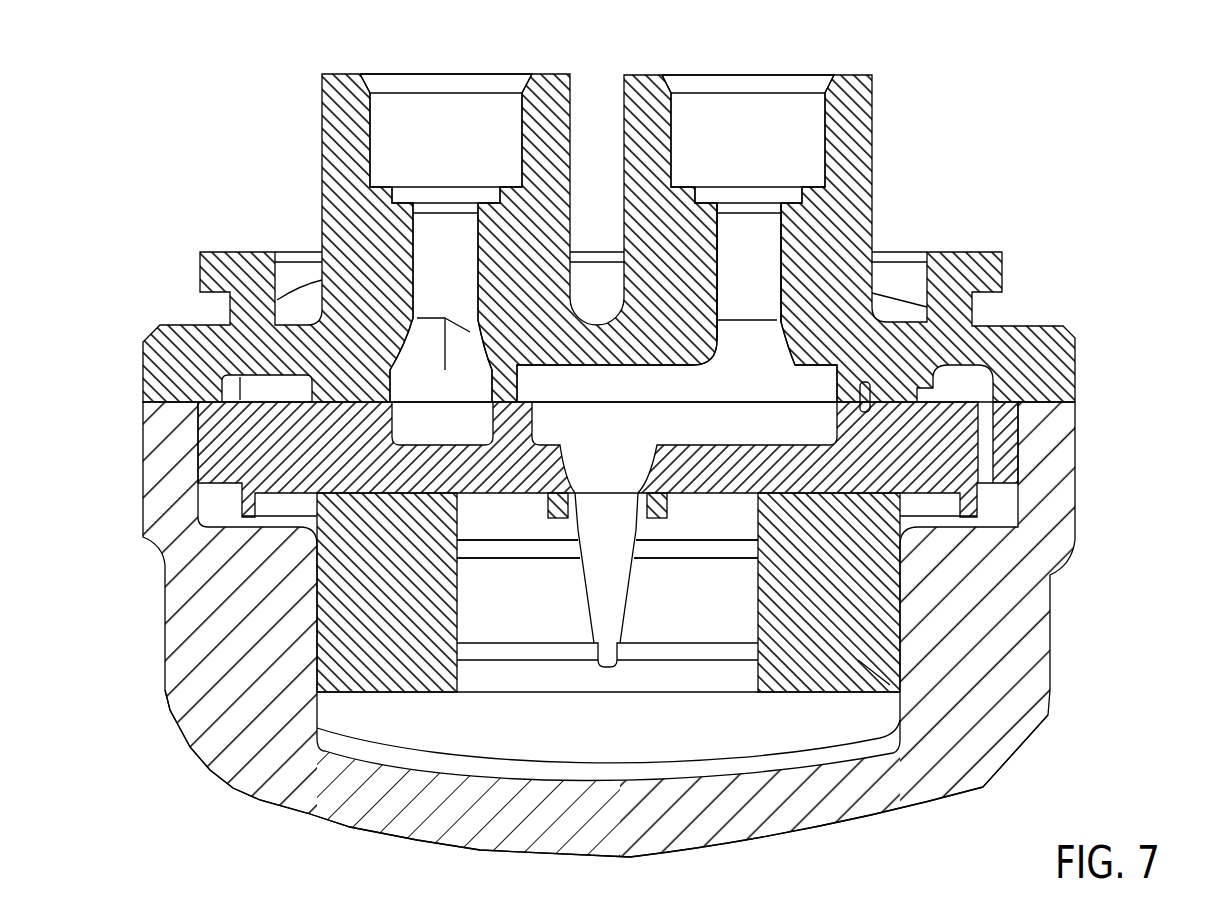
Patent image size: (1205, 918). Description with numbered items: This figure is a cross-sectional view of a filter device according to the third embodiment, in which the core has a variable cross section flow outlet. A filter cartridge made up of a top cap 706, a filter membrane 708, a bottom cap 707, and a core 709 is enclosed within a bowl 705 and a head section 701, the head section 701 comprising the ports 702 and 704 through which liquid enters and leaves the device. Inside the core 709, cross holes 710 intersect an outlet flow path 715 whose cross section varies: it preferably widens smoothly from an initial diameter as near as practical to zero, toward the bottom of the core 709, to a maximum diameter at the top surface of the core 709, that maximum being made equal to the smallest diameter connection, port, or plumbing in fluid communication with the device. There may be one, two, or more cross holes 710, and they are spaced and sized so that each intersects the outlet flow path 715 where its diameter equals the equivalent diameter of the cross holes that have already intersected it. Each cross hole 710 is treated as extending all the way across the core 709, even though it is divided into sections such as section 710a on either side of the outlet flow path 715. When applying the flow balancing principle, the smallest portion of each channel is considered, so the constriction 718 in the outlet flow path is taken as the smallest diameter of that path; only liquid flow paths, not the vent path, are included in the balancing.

The head section 701 is at (1053, 371).
The port 702 is at (745, 112).
The port 704 is at (440, 112).
The bowl 705 is at (1013, 655).
The top cap 706 is at (1012, 452).
The bottom cap 707 is at (807, 725).
The filter membrane 708 is at (858, 660).
The core 709 is at (490, 678).
The cross holes 710 is at (477, 650).
The section of cross hole 710a is at (522, 550).
The outlet flow path 715 is at (600, 617).
The constriction 718 is at (762, 240).